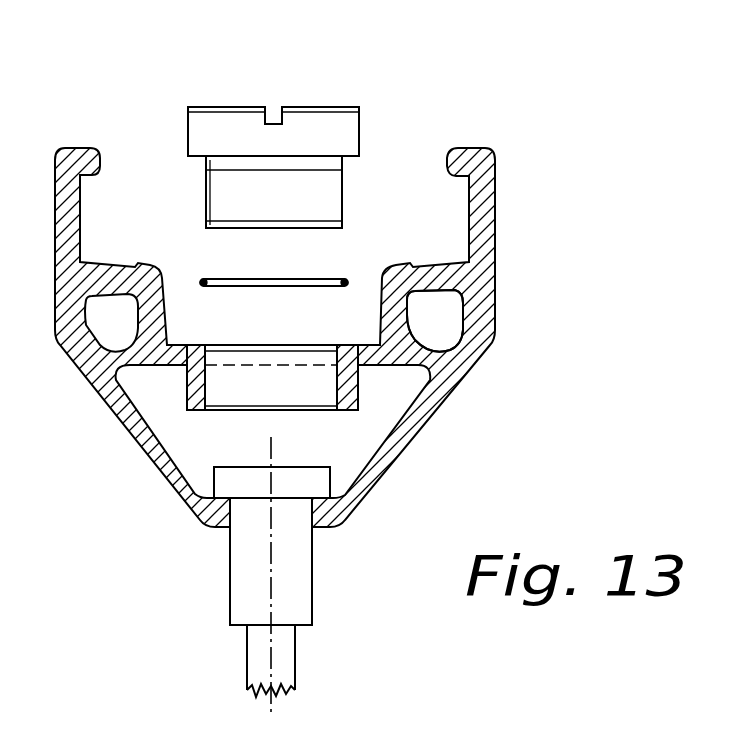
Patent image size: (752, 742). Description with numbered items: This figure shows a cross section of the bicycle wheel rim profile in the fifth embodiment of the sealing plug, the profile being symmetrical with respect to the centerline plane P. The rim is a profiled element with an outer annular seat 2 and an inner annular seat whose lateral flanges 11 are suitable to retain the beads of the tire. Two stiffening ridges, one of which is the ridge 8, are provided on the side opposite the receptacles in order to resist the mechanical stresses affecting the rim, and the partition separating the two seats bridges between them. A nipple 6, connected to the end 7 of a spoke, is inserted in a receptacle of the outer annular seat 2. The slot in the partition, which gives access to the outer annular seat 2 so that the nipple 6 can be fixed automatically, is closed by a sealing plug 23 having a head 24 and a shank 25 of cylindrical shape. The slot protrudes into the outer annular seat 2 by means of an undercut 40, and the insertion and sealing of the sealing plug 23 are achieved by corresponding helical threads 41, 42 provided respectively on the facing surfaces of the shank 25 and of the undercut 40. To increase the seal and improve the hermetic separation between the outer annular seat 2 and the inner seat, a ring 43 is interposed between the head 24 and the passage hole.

The outer annular seat 2 is at (317, 337).
The nipple 6 is at (290, 567).
The spoke end 7 is at (280, 655).
The ridge 8 is at (440, 335).
The lateral flange 11 is at (480, 240).
The sealing plug 23 is at (265, 119).
The head 24 is at (203, 132).
The shank 25 is at (312, 200).
The undercut 40 is at (191, 402).
The helical thread 41 is at (206, 195).
The helical thread 42 is at (247, 432).
The ring 43 is at (255, 301).
The centerline plane P is at (272, 712).